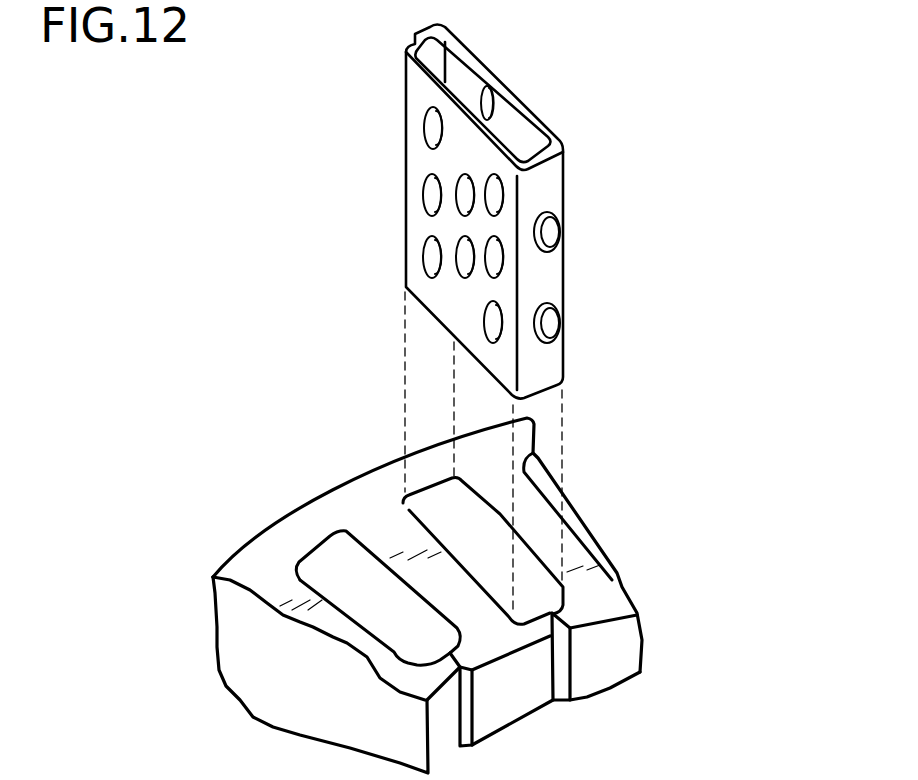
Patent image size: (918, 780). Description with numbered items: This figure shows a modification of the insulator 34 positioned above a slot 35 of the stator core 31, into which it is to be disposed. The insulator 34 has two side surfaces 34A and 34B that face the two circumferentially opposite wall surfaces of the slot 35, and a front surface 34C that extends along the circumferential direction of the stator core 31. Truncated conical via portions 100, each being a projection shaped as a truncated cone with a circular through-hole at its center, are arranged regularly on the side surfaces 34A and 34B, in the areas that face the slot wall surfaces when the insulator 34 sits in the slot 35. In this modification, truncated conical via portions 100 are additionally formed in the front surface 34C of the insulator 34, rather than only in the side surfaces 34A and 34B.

The stator core 31 is at (355, 568).
The insulator 34 is at (565, 197).
The side surface 34A is at (450, 288).
The side surface 34B is at (521, 135).
The front surface 34C is at (547, 278).
The slot 35 is at (445, 512).
The truncated conical via portion 100 is at (427, 130).